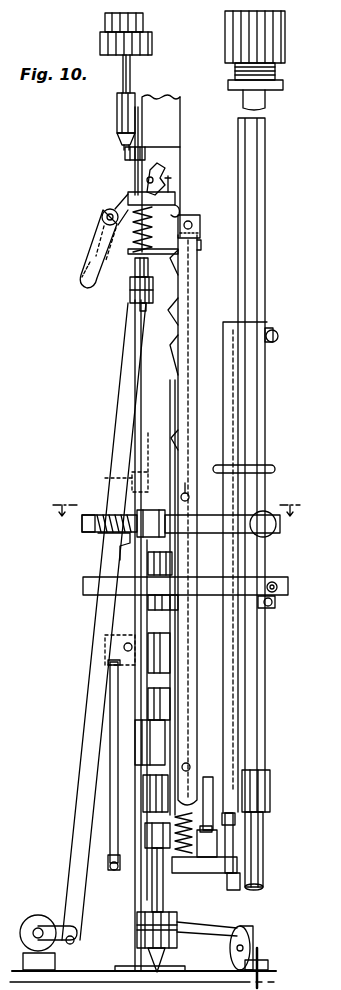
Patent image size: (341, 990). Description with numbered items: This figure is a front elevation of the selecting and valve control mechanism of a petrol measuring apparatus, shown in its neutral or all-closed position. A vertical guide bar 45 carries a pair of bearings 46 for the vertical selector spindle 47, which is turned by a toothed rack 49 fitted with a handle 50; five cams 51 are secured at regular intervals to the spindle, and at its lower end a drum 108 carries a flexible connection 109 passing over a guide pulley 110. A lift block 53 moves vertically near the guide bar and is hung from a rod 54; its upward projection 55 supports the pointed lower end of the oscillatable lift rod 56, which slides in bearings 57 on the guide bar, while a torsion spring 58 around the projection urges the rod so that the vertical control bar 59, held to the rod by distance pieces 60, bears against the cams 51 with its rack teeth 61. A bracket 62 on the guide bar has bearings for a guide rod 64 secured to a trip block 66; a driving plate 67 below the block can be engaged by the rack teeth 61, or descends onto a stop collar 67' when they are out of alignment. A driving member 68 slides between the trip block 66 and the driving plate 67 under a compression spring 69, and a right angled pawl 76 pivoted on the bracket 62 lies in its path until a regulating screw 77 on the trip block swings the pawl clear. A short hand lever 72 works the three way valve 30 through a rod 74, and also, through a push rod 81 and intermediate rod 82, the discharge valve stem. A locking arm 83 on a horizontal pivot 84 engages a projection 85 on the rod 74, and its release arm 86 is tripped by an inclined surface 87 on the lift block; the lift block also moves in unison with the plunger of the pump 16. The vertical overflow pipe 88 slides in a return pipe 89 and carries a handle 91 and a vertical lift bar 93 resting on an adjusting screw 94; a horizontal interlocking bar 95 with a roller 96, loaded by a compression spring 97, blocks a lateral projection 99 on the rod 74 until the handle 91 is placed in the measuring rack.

The pump 16 is at (176, 521).
The three way valve 30 is at (38, 917).
The vertical guide bar 45 is at (68, 790).
The bearings 46 is at (145, 837).
The vertical selector spindle 47 is at (152, 897).
The toothed rack 49 is at (90, 585).
The handle 50 is at (275, 585).
The cams 51 is at (142, 735).
The lift block 53 is at (232, 888).
The rod 54 is at (210, 790).
The upward projection 55 is at (180, 845).
The oscillatable lift rod 56 is at (185, 385).
The bearings 57 is at (200, 243).
The torsion spring 58 is at (200, 860).
The vertical control bar 59 is at (190, 300).
The distance pieces 60 is at (208, 733).
The rack teeth 61 is at (186, 258).
The bracket 62 is at (108, 197).
The guide rod 64 is at (135, 178).
The trip block 66 is at (175, 195).
The driving plate 67 is at (121, 286).
The stop collar 67' is at (122, 319).
The driving member 68 is at (178, 210).
The compression spring 69 is at (130, 262).
The short hand lever 72 is at (82, 287).
The rod 74 is at (114, 446).
The right angled pawl 76 is at (157, 172).
The regulating screw 77 is at (170, 178).
The push rod 81 is at (125, 150).
The intermediate rod 82 is at (130, 77).
The locking arm 83 is at (150, 448).
The horizontal pivot 84 is at (124, 648).
The projection 85 is at (135, 476).
The release arm 86 is at (112, 765).
The inclined surface 87 is at (108, 858).
The vertical overflow pipe 88 is at (258, 228).
The return pipe 89 is at (250, 853).
The laterally projecting handle 91 is at (217, 468).
The vertical lift bar 93 is at (232, 412).
The adjusting screw 94 is at (235, 827).
The horizontal interlocking bar 95 is at (210, 530).
The roller 96 is at (266, 535).
The compression spring 97 is at (118, 515).
The lateral projection 99 is at (128, 547).
The drum 108 is at (140, 945).
The flexible connection 109 is at (205, 930).
The guide pulley 110 is at (250, 930).